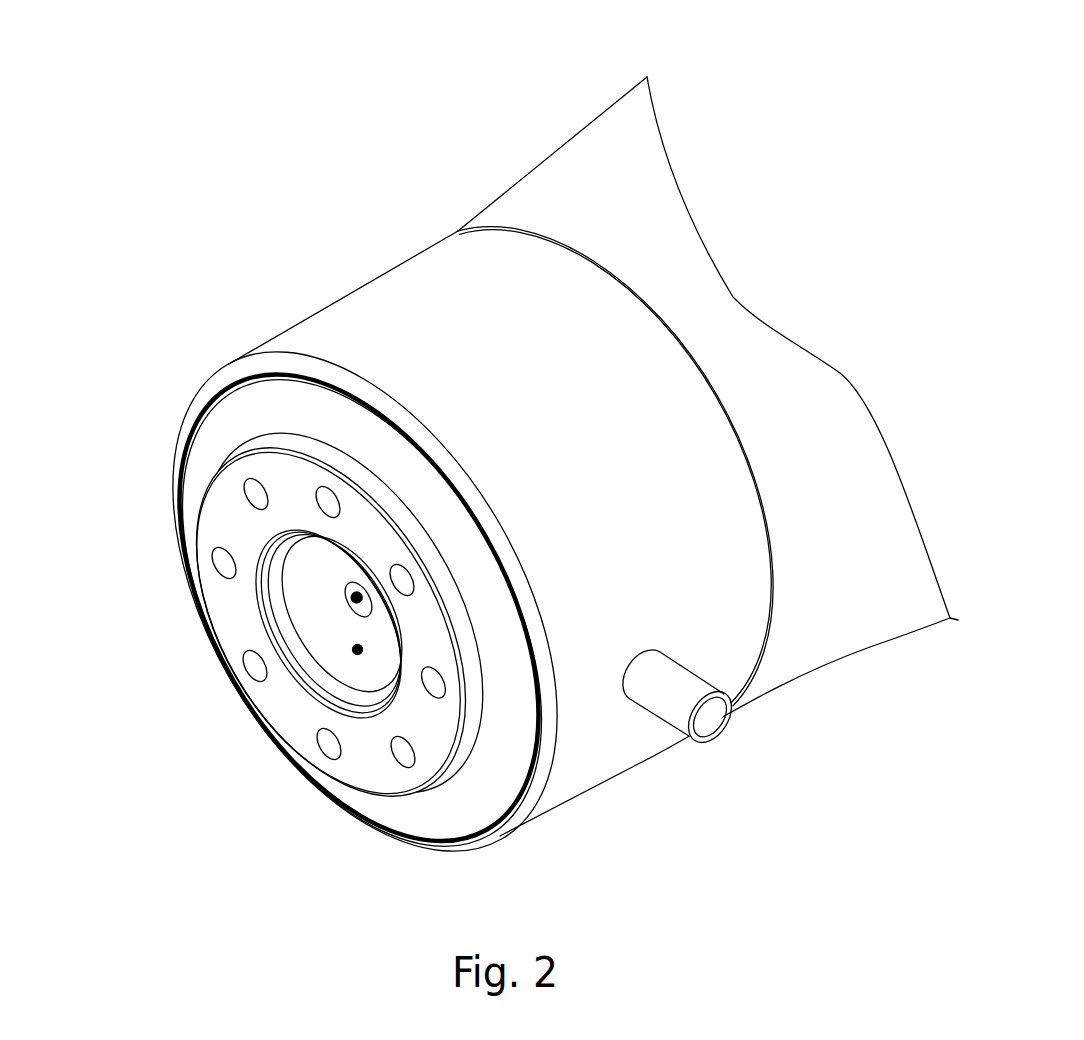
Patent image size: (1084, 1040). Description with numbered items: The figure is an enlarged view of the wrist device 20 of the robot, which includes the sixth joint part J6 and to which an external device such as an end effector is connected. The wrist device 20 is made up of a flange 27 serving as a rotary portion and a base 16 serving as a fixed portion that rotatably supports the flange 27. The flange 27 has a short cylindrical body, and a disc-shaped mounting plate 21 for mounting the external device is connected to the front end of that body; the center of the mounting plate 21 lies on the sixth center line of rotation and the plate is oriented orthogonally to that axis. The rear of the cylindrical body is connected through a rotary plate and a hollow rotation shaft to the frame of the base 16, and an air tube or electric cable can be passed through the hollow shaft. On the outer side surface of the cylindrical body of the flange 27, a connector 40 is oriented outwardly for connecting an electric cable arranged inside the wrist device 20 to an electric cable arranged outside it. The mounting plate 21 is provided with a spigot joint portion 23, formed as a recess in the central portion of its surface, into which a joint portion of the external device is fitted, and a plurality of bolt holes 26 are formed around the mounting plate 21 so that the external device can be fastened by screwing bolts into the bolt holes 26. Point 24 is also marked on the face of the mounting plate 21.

The base 16 is at (597, 175).
The joint part J6 is at (445, 227).
The wrist device 20 is at (425, 518).
The mounting plate 21 is at (202, 443).
The spigot joint portion 23 is at (353, 652).
The reference point 24 is at (352, 600).
The bolt holes 26 is at (397, 760).
The flange 27 is at (385, 300).
The connector 40 is at (700, 743).